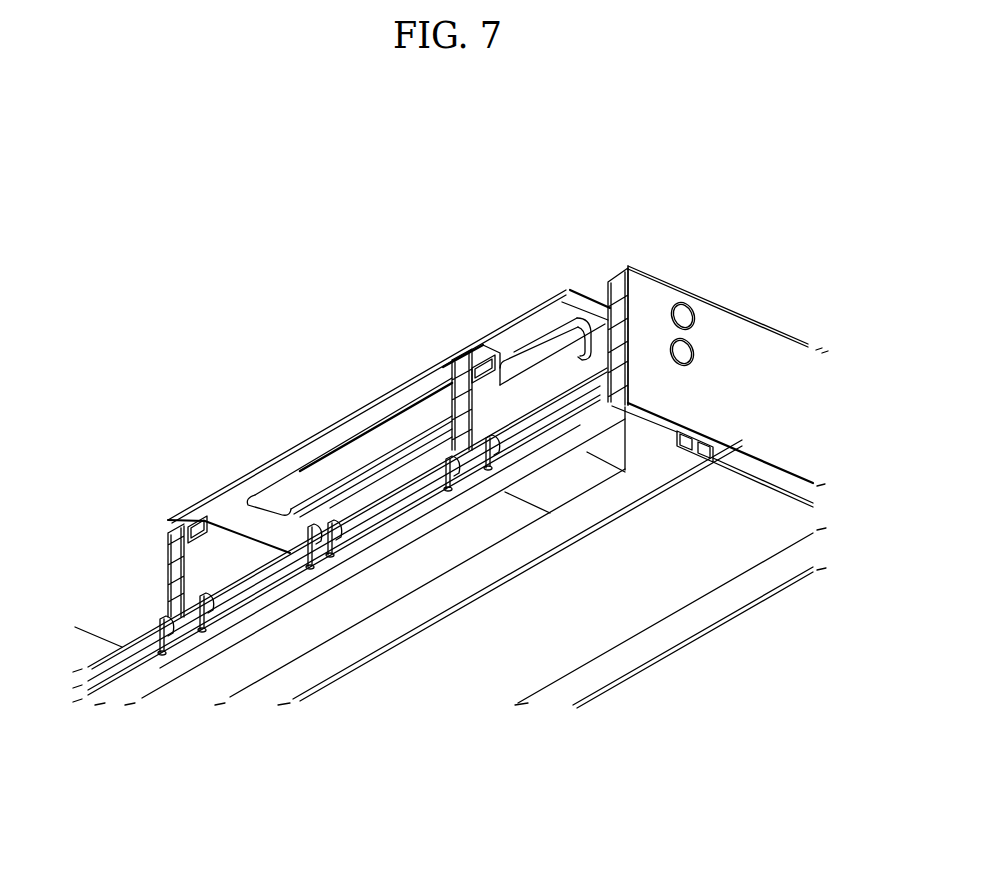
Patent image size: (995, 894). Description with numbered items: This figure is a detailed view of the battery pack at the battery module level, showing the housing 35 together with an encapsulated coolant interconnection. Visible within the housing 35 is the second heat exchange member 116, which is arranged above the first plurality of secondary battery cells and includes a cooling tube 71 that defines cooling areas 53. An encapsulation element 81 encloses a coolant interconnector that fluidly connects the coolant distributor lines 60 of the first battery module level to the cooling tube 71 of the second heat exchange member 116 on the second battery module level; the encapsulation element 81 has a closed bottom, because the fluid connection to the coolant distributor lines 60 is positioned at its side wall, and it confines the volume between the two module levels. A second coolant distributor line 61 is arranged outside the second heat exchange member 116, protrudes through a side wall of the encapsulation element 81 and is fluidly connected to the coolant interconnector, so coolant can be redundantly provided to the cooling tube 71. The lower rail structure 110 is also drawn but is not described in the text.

The housing 35 is at (755, 345).
The cooling areas 53 is at (360, 452).
The coolant distributor lines 60 is at (443, 552).
The second coolant distributor line 61 is at (682, 318).
The cooling tube 71 is at (275, 497).
The encapsulation element 81 is at (552, 362).
The rail 110 is at (748, 528).
The second heat exchange member 116 is at (228, 510).